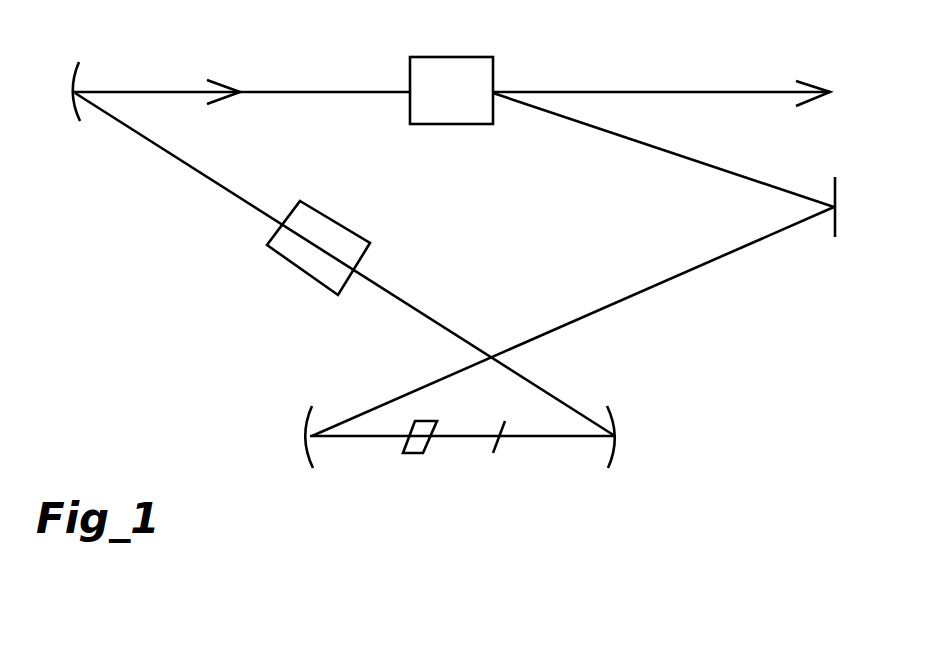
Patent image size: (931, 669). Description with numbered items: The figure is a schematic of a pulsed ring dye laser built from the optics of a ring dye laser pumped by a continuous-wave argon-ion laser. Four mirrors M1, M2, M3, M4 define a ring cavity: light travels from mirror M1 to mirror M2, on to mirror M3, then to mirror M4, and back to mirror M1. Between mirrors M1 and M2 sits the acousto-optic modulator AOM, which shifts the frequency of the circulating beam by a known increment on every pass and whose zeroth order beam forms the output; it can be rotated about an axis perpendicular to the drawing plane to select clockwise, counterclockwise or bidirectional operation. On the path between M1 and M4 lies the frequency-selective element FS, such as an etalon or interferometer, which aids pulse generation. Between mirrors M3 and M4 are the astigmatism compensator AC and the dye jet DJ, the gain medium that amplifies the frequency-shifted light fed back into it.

The mirror M1 is at (54, 91).
The mirror M2 is at (862, 207).
The mirror M3 is at (283, 437).
The mirror M4 is at (640, 437).
The acousto-optic modulator AOM is at (451, 71).
The frequency-selective element FS is at (318, 237).
The astigmatism compensator AC is at (417, 462).
The dye jet (gain medium) DJ is at (497, 462).